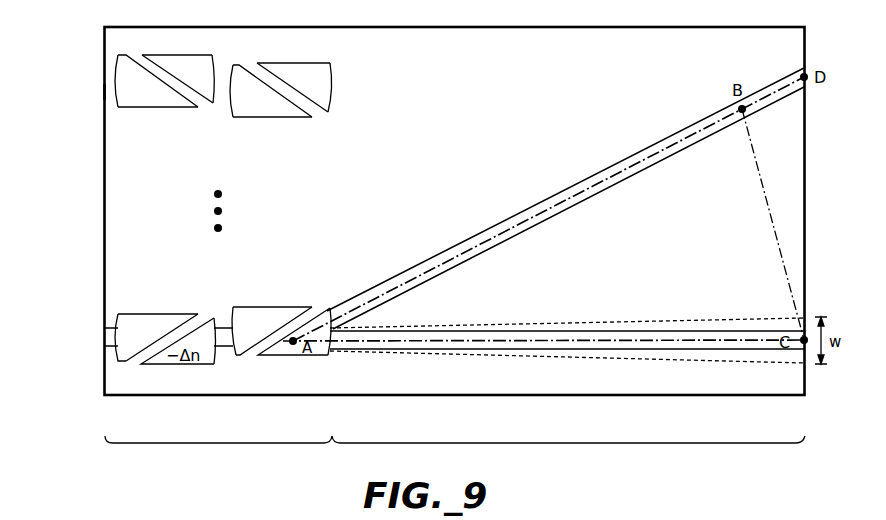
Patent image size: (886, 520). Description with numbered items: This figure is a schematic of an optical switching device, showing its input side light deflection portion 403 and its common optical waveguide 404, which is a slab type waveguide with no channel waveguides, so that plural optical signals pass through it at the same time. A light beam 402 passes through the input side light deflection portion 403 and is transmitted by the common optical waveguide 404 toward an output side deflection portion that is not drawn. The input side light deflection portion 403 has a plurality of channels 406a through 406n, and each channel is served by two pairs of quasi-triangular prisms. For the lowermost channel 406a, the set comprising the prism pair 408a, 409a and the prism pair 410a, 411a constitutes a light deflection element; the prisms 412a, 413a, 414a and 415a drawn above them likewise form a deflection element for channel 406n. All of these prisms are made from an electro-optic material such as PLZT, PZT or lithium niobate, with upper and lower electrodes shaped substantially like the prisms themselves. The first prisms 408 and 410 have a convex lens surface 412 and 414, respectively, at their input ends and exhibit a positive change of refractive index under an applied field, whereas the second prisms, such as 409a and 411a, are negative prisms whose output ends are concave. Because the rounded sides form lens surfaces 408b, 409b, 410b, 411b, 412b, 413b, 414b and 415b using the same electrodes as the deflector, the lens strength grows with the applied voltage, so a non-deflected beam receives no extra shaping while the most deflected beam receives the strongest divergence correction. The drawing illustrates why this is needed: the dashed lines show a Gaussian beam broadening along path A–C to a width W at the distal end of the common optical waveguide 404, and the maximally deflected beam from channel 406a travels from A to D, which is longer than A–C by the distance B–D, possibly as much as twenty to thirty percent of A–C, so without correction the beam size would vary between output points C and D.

The light beam 402 is at (165, 341).
The input side light deflection portion 403 is at (222, 443).
The common optical waveguide 404 is at (568, 443).
The channel 406a is at (99, 339).
The channel 406n is at (95, 92).
The first quasi-triangular prism 408 is at (118, 311).
The quasi-triangular prism 408a is at (142, 313).
The lens surface 408b is at (117, 319).
The quasi-triangular prism 409a is at (182, 365).
The lens surface 409b is at (216, 361).
The first quasi-triangular prism 410 is at (282, 282).
The quasi-triangular prism 410a is at (268, 307).
The lens surface 410b is at (233, 310).
The quasi-triangular prism 411a is at (313, 356).
The lens surface 411b is at (331, 352).
The convex lens surface 412 is at (119, 113).
The quasi-triangular prism 412a is at (128, 108).
The lens surface 412b is at (117, 58).
The quasi-triangular prism 413a is at (150, 54).
The lens surface 413b is at (215, 67).
The convex lens surface 414 is at (261, 123).
The quasi-triangular prism 414a is at (302, 117).
The lens surface 414b is at (229, 103).
The quasi-triangular prism 415a is at (305, 63).
The lens surface 415b is at (329, 90).